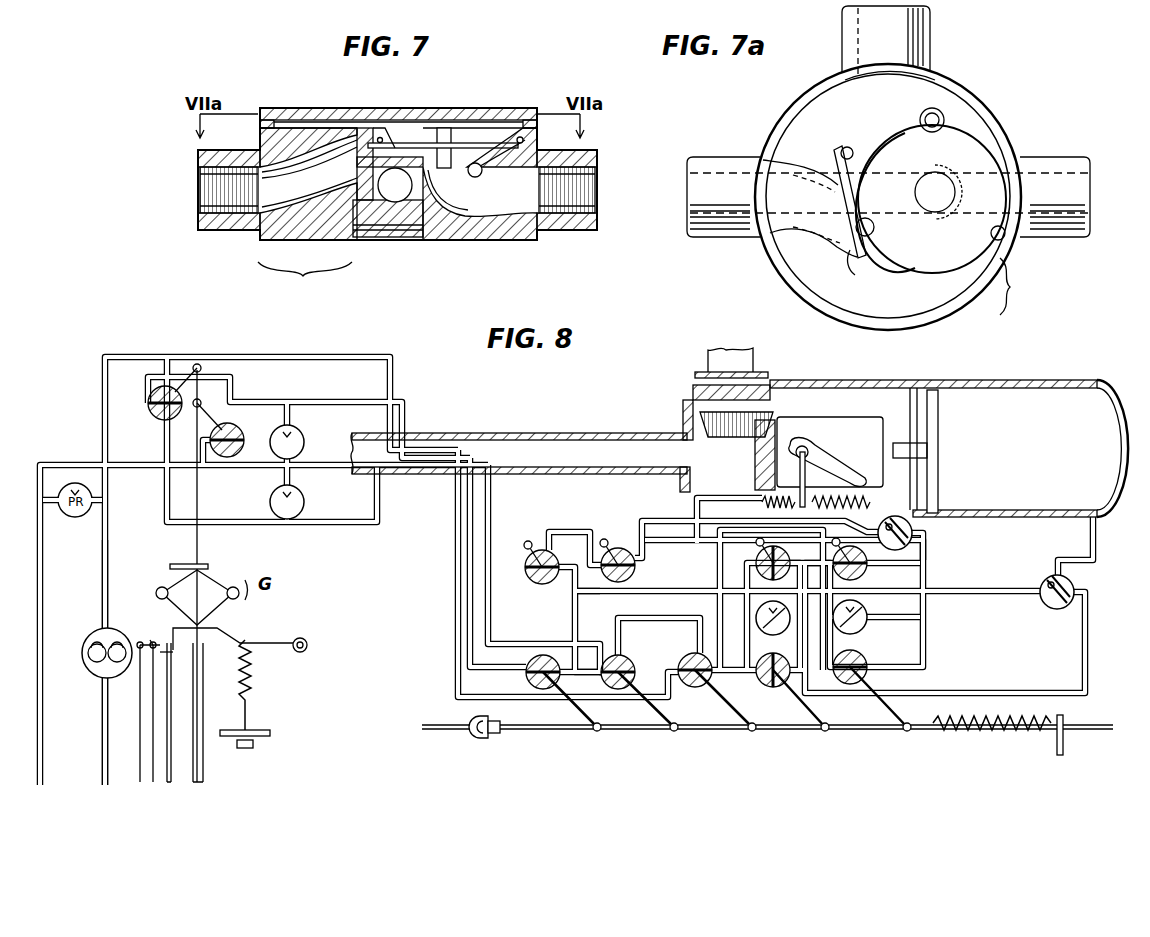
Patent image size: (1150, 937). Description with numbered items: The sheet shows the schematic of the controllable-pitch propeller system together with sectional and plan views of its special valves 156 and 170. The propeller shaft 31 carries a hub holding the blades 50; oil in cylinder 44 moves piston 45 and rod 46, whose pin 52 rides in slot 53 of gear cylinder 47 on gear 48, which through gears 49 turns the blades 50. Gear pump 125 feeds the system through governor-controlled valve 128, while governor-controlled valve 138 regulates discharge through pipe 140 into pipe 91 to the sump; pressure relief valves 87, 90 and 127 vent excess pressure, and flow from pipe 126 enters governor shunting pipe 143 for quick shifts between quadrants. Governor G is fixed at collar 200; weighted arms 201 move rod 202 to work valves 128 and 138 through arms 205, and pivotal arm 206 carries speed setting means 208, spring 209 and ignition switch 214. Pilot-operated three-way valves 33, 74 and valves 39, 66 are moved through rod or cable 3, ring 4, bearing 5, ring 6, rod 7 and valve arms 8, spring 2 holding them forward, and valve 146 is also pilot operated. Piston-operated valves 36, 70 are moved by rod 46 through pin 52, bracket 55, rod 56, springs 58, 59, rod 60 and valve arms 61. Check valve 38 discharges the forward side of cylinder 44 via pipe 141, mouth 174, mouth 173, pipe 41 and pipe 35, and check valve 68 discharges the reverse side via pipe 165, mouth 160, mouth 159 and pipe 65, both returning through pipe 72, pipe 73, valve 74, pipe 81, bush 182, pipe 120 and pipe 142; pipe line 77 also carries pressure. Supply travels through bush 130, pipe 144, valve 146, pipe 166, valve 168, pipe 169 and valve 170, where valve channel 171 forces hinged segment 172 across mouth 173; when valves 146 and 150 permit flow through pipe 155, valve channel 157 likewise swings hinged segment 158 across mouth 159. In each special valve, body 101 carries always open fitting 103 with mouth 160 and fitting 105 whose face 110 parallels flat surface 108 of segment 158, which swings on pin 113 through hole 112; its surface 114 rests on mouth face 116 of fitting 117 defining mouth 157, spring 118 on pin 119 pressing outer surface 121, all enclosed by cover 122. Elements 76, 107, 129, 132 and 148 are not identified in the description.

In FIG. 8, the spring 2 is at (998, 735).
In FIG. 8, the rod or cable 3 is at (426, 730).
In FIG. 8, the ring 4 is at (470, 735).
In FIG. 8, the bearing 5 is at (470, 716).
In FIG. 8, the ring 6 is at (494, 735).
In FIG. 8, the rod 7 is at (548, 731).
In FIG. 8, the valve arms 8 is at (585, 715).
In FIG. 8, the propeller shaft 31 is at (548, 432).
In FIG. 8, the three-way valve 33 is at (613, 655).
In FIG. 8, the pipe line 35 is at (815, 620).
In FIG. 8, the valve 36 is at (866, 570).
In FIG. 8, the check valve 38 is at (866, 605).
In FIG. 8, the valve 39 is at (866, 662).
In FIG. 8, the pipe line 41 is at (925, 652).
In FIG. 8, the cylinder 44 is at (1022, 380).
In FIG. 8, the piston 45 is at (920, 420).
In FIG. 8, the piston shaft or rod 46 is at (930, 450).
In FIG. 8, the gear cylinder 47 is at (860, 417).
In FIG. 8, the gear 48 is at (755, 448).
In FIG. 8, the gears 49 is at (690, 410).
In FIG. 8, the propeller blades 50 is at (730, 350).
In FIG. 8, the pin 52 is at (800, 440).
In FIG. 8, the slot 53 is at (825, 450).
In FIG. 8, the bracket 55 is at (827, 451).
In FIG. 8, the rod 56 is at (705, 496).
In FIG. 8, the spring 58 is at (770, 496).
In FIG. 8, the spring 59 is at (839, 471).
In FIG. 8, the rod 60 is at (568, 530).
In FIG. 8, the valve arms 61 is at (530, 540).
In FIG. 8, the pipe line 65 is at (1030, 692).
In FIG. 8, the valve 66 is at (773, 681).
In FIG. 8, the check valve 68 is at (756, 612).
In FIG. 8, the valve 70 is at (758, 555).
In FIG. 8, the pipe line 72 is at (748, 630).
In FIG. 8, the pipe 73 is at (758, 682).
In FIG. 8, the three-way valve 74 is at (700, 680).
In FIG. 8, the pipe 76 is at (700, 627).
In FIG. 8, the pipe line 77 is at (678, 667).
In FIG. 8, the pipe line 81 is at (455, 556).
In FIG. 8, the pressure relief valve 87 is at (302, 500).
In FIG. 8, the pressure relief valve 90 is at (302, 440).
In FIG. 8, the pipe line 91 is at (75, 462).
In FIG. 7A, the valve body 101 is at (775, 268).
In FIG. 7A, the always open fitting 103 is at (930, 30).
In FIG. 7, the fitting 105 is at (580, 232).
In FIG. 7A, the fitting 105 is at (1078, 158).
In FIG. 8, the fitting 105 is at (138, 727).
In FIG. 8, the wire 107 is at (151, 752).
In FIG. 7, the flat finished surface 108 is at (397, 185).
In FIG. 7, the face 110 is at (492, 175).
In FIG. 7A, the face 110 is at (940, 181).
In FIG. 7A, the hole 112 is at (866, 140).
In FIG. 7A, the pin 113 is at (840, 145).
In FIG. 7, the surface 114 is at (352, 165).
In FIG. 7A, the surface 114 is at (830, 175).
In FIG. 7A, the mouth face 116 is at (846, 270).
In FIG. 7, the fitting 117 is at (220, 232).
In FIG. 7A, the fitting 117 is at (718, 165).
In FIG. 7, the spring 118 is at (492, 143).
In FIG. 7A, the spring 118 is at (990, 145).
In FIG. 8, the spring 118 is at (103, 697).
In FIG. 7, the pin 119 is at (446, 128).
In FIG. 7A, the pin 119 is at (945, 117).
In FIG. 7A, the pipe 120 is at (993, 240).
In FIG. 8, the pipe 120 is at (355, 525).
In FIG. 7A, the outer surface 121 is at (872, 234).
In FIG. 7, the cover 122 is at (300, 108).
In FIG. 8, the gear pump 125 is at (95, 630).
In FIG. 8, the pipe 126 is at (102, 560).
In FIG. 8, the pressure relief valve 127 is at (72, 510).
In FIG. 8, the governor controlled valve 128 is at (155, 415).
In FIG. 8, the pipe 129 is at (310, 400).
In FIG. 8, the bush 130 is at (405, 440).
In FIG. 8, the pipe 132 is at (485, 631).
In FIG. 8, the governor controlled valve 138 is at (239, 430).
In FIG. 8, the pipe 140 is at (222, 465).
In FIG. 8, the pipe 141 is at (940, 480).
In FIG. 8, the pipe 142 is at (227, 458).
In FIG. 8, the governor shunting pipe 143 is at (102, 375).
In FIG. 8, the pipe 144 is at (467, 597).
In FIG. 8, the pilot-operated valve 146 is at (530, 680).
In FIG. 8, the pipe 148 is at (572, 612).
In FIG. 8, the valve 150 is at (529, 569).
In FIG. 8, the pipe 155 is at (718, 568).
In FIG. 7, the valve 156 is at (305, 283).
In FIG. 7A, the valve 156 is at (1036, 286).
In FIG. 8, the valve 156 is at (1045, 580).
In FIG. 7, the valve channel 157 is at (308, 184).
In FIG. 7A, the valve channel 157 is at (813, 225).
In FIG. 8, the valve channel 157 is at (1053, 605).
In FIG. 7, the hinged segment 158 is at (390, 145).
In FIG. 7A, the hinged segment 158 is at (893, 270).
In FIG. 8, the hinged segment 158 is at (1075, 593).
In FIG. 7, the mouth 159 is at (470, 200).
In FIG. 7A, the mouth 159 is at (942, 213).
In FIG. 8, the mouth 159 is at (1072, 582).
In FIG. 7, the mouth 160 is at (400, 240).
In FIG. 7A, the mouth 160 is at (940, 78).
In FIG. 8, the mouth 160 is at (1052, 575).
In FIG. 8, the pipe 165 is at (1096, 535).
In FIG. 8, the pipe 166 is at (594, 603).
In FIG. 8, the valve 168 is at (700, 542).
In FIG. 8, the pipe 169 is at (675, 520).
In FIG. 8, the valve 170 is at (893, 516).
In FIG. 8, the valve channel 171 is at (905, 548).
In FIG. 8, the hinged segment 172 is at (910, 535).
In FIG. 8, the mouth 173 is at (910, 525).
In FIG. 8, the always open mouth 174 is at (915, 520).
In FIG. 8, the bush 182 is at (405, 470).
In FIG. 8, the collar 200 is at (210, 566).
In FIG. 8, the weighted arms 201 is at (155, 591).
In FIG. 8, the rod 202 is at (195, 548).
In FIG. 8, the arms 205 is at (202, 573).
In FIG. 8, the pivotal arm 206 is at (298, 638).
In FIG. 8, the governor speed setting means 208 is at (255, 745).
In FIG. 8, the spring 209 is at (252, 666).
In FIG. 8, the engine ignition switch 214 is at (148, 640).